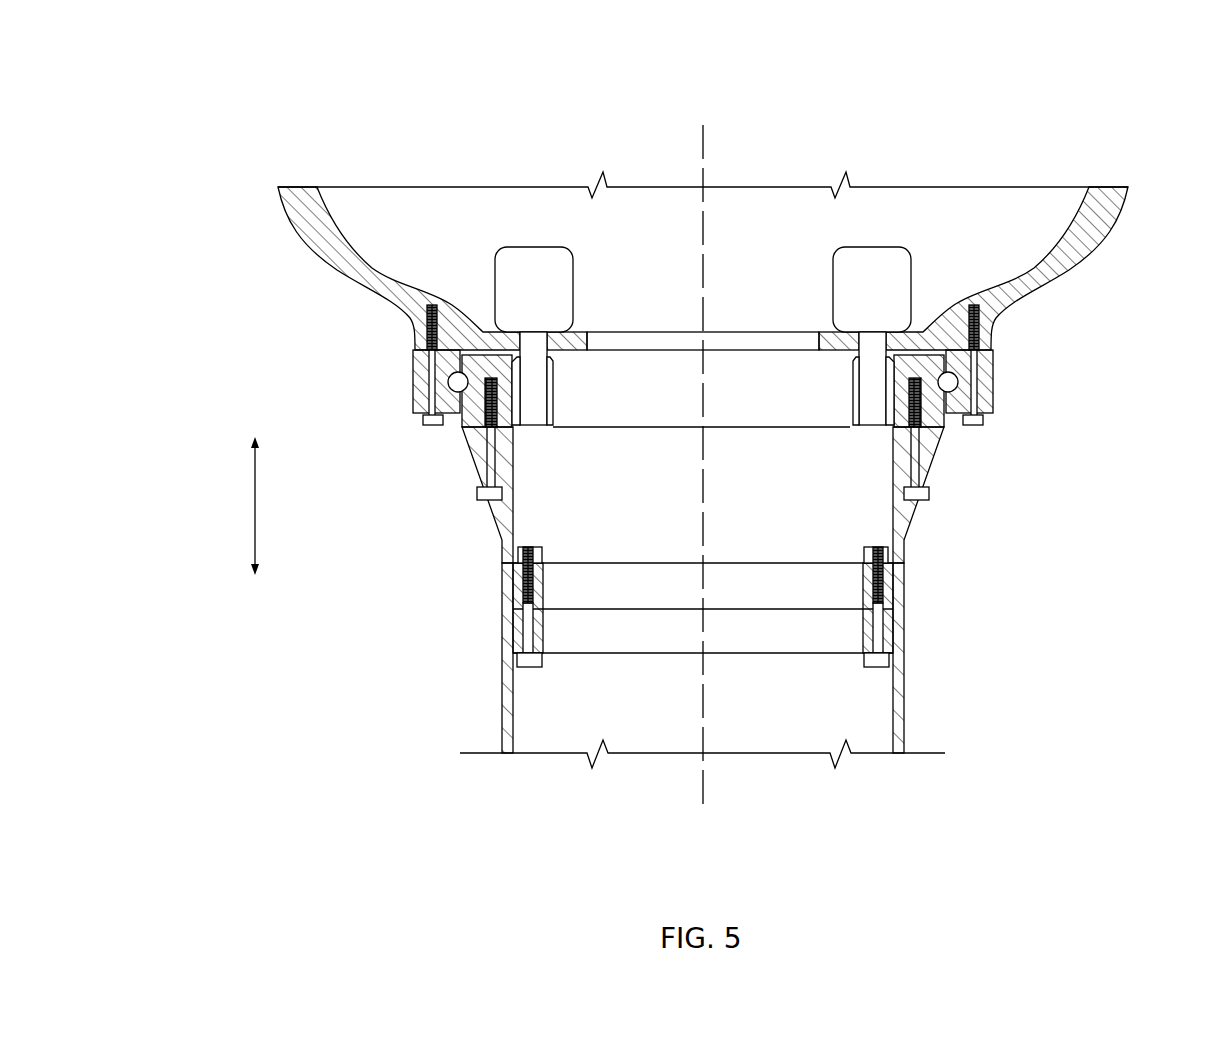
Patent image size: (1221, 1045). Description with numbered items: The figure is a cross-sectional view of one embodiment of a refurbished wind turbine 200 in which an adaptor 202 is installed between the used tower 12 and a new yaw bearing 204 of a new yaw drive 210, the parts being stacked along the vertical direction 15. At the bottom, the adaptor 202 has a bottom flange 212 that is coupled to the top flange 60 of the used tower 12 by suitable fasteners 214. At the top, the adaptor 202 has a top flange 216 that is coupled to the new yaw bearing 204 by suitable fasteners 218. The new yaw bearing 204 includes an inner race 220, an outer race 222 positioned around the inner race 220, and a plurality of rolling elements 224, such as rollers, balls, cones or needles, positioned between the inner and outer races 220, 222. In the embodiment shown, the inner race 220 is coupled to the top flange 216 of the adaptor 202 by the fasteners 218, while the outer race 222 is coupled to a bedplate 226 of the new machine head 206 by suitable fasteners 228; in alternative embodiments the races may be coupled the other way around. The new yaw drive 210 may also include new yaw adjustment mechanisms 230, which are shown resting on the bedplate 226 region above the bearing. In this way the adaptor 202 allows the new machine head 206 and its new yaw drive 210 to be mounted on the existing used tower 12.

The refurbished wind turbine 200 is at (200, 78).
The new machine head 206 is at (1095, 272).
The bedplate 226 is at (575, 335).
The outer race 222 is at (413, 380).
The top flange 216 is at (463, 445).
The inner race 220 is at (918, 375).
The new yaw bearing 204 is at (950, 425).
The adaptor 202 is at (905, 568).
The used tower 12 is at (908, 715).
The new yaw drive 210 is at (803, 313).
The new yaw adjustment mechanisms 230 is at (530, 247).
The fasteners 228 is at (428, 424).
The rolling elements 224 is at (455, 372).
The fasteners 218 is at (488, 498).
The bottom flange 212 is at (538, 585).
The top flange 60 is at (538, 623).
The fasteners 214 is at (533, 662).
The vertical direction 15 is at (255, 510).